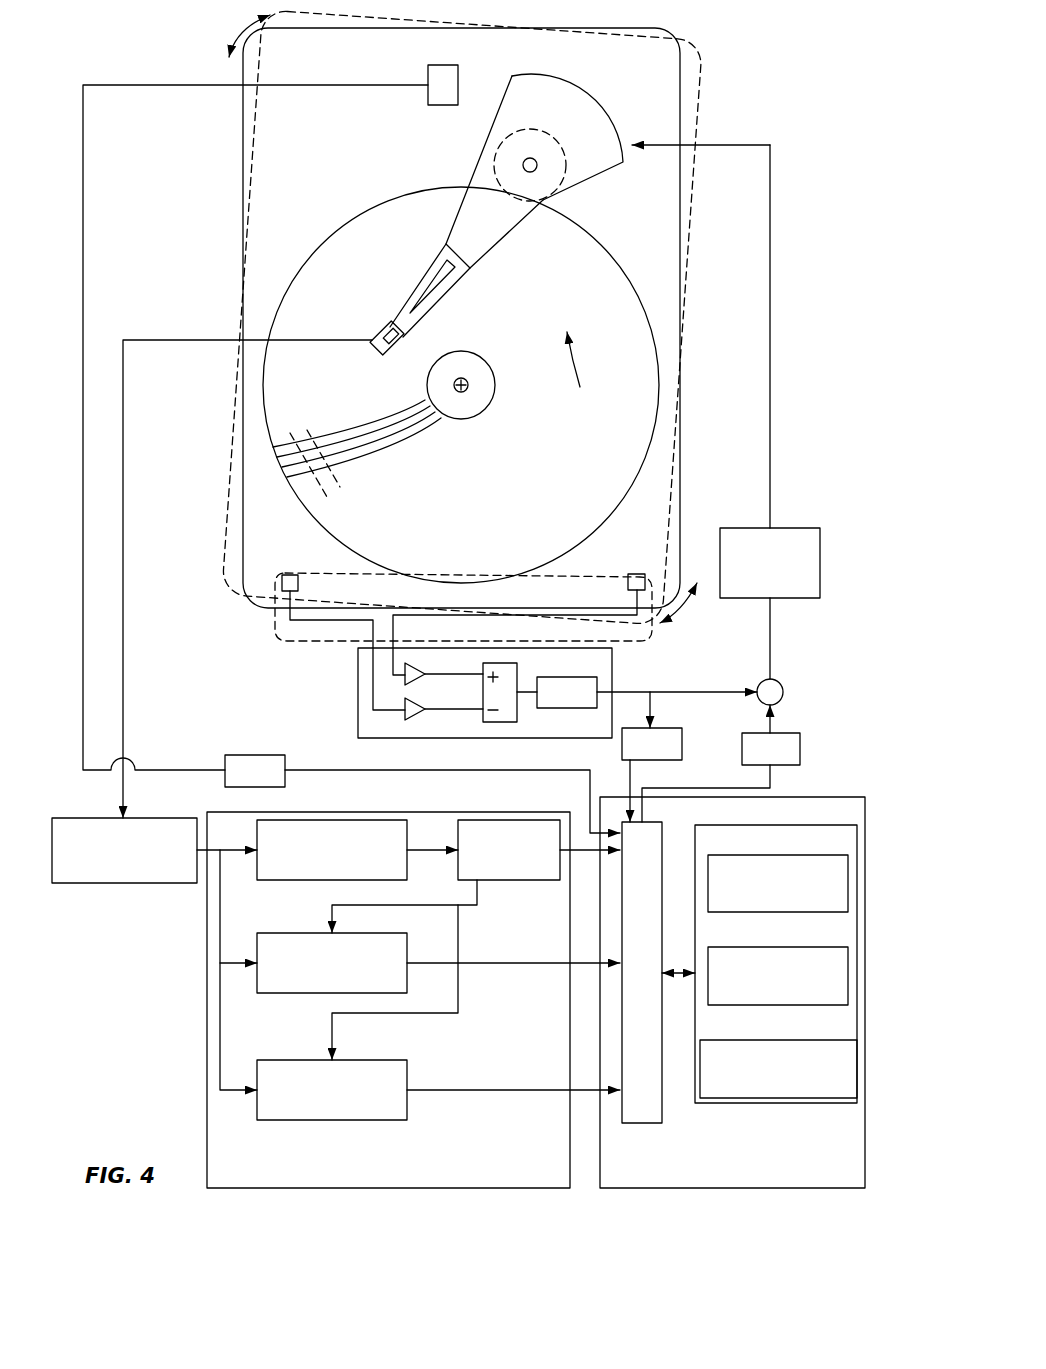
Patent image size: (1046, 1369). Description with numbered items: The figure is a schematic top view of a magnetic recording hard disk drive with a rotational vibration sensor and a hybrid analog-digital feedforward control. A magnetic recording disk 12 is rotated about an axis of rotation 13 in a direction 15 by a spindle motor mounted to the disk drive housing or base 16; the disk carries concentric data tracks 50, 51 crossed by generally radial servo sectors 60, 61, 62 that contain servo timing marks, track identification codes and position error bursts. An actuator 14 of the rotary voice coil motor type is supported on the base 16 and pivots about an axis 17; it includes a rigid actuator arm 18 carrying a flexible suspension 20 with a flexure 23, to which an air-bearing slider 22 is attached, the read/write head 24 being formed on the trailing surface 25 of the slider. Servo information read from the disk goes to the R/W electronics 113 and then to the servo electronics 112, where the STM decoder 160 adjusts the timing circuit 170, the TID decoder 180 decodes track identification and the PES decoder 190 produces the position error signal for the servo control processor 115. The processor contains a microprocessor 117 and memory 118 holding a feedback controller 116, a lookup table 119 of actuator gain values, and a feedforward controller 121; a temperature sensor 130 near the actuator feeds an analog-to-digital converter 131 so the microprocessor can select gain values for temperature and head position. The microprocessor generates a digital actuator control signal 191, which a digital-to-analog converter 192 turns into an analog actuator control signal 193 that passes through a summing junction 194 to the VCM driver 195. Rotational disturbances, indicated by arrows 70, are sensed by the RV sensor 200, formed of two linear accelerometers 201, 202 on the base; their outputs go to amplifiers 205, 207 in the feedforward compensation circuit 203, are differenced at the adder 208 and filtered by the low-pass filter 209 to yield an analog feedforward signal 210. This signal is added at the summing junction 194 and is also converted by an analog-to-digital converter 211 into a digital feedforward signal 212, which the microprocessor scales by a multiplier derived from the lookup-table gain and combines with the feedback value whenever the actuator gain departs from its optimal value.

The magnetic recording disk 12 is at (467, 547).
The axis of rotation 13 is at (469, 384).
The actuator 14 is at (586, 95).
The direction of rotation 15 is at (577, 367).
The disk drive housing or base 16 is at (608, 28).
The pivot axis 17 is at (523, 163).
The rigid actuator arm 18 is at (458, 230).
The suspension 20 is at (423, 278).
The air-bearing slider 22 is at (386, 325).
The flexure 23 is at (410, 336).
The read/write head 24 is at (405, 348).
The trailing surface 25 is at (378, 350).
The data track 50 is at (340, 488).
The data track 51 is at (327, 497).
The servo sector 60 is at (418, 444).
The servo sector 61 is at (406, 420).
The servo sector 62 is at (362, 432).
The rotational disturbances 70 is at (247, 25).
The servo electronics 112 is at (206, 963).
The R/W electronics 113 is at (117, 818).
The servo control processor 115 is at (797, 797).
The feedback controller 116 is at (793, 855).
The microprocessor 117 is at (662, 1103).
The memory 118 is at (793, 825).
The lookup table 119 is at (792, 947).
The feedforward controller 121 is at (793, 1040).
The temperature sensor 130 is at (445, 65).
The analog-to-digital converter 131 is at (270, 755).
The STM decoder 160 is at (293, 881).
The timing circuit 170 is at (507, 880).
The TID decoder 180 is at (293, 994).
The PES decoder 190 is at (293, 1121).
The digital actuator control signal 191 is at (660, 788).
The digital-to-analog converter 192 is at (800, 749).
The analog actuator control signal 193 is at (777, 720).
The summing junction 194 is at (784, 692).
The VCM driver 195 is at (803, 528).
The rotational vibration sensor 200 is at (272, 628).
The linear accelerometer 201 is at (290, 574).
The linear accelerometer 202 is at (637, 573).
The feedforward compensation circuit 203 is at (613, 673).
The amplifier 205 is at (416, 704).
The amplifier 207 is at (416, 669).
The adder 208 is at (503, 723).
The low-pass filter 209 is at (550, 708).
The analog feedforward signal 210 is at (687, 692).
The analog-to-digital converter 211 is at (682, 737).
The digital feedforward signal 212 is at (620, 767).